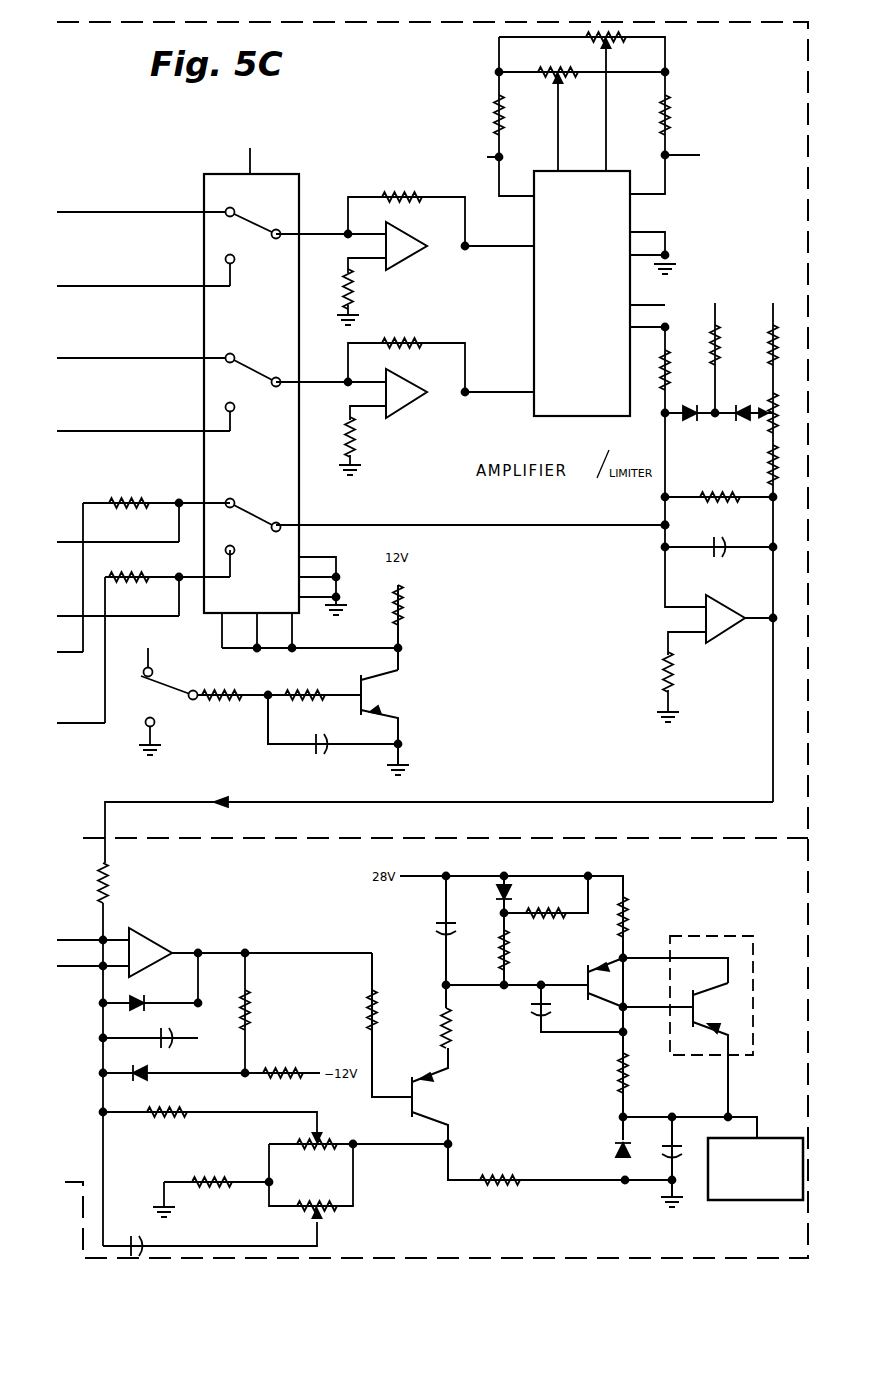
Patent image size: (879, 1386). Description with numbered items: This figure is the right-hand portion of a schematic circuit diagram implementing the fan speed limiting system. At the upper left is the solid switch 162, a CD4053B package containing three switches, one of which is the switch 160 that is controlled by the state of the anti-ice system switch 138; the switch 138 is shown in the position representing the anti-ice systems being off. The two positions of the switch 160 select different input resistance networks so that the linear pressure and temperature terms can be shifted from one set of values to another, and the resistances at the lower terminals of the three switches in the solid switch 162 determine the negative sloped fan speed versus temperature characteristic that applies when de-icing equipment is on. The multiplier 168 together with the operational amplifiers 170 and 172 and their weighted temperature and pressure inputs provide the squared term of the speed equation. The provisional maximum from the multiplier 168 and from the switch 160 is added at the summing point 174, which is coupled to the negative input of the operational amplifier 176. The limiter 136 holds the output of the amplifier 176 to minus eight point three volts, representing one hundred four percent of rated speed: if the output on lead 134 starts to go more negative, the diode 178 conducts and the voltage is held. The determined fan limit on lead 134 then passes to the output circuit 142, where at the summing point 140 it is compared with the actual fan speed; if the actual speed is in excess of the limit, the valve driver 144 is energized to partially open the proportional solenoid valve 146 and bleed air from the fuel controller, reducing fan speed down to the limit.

The lead 134 is at (258, 805).
The limiter 136 is at (745, 470).
The switch 138 is at (167, 683).
The summing point 140 is at (107, 935).
The output circuit 142 is at (290, 838).
The valve driver 144 is at (755, 1038).
The proportional solenoid valve 146 is at (775, 1136).
The switch 160 is at (268, 518).
The solid switch 162 is at (289, 173).
The multiplier 168 is at (534, 297).
The operational amplifier 170 is at (406, 257).
The operational amplifier 172 is at (410, 403).
The summing point 174 is at (663, 526).
The operational amplifier 176 is at (733, 633).
The diode 178 is at (687, 405).